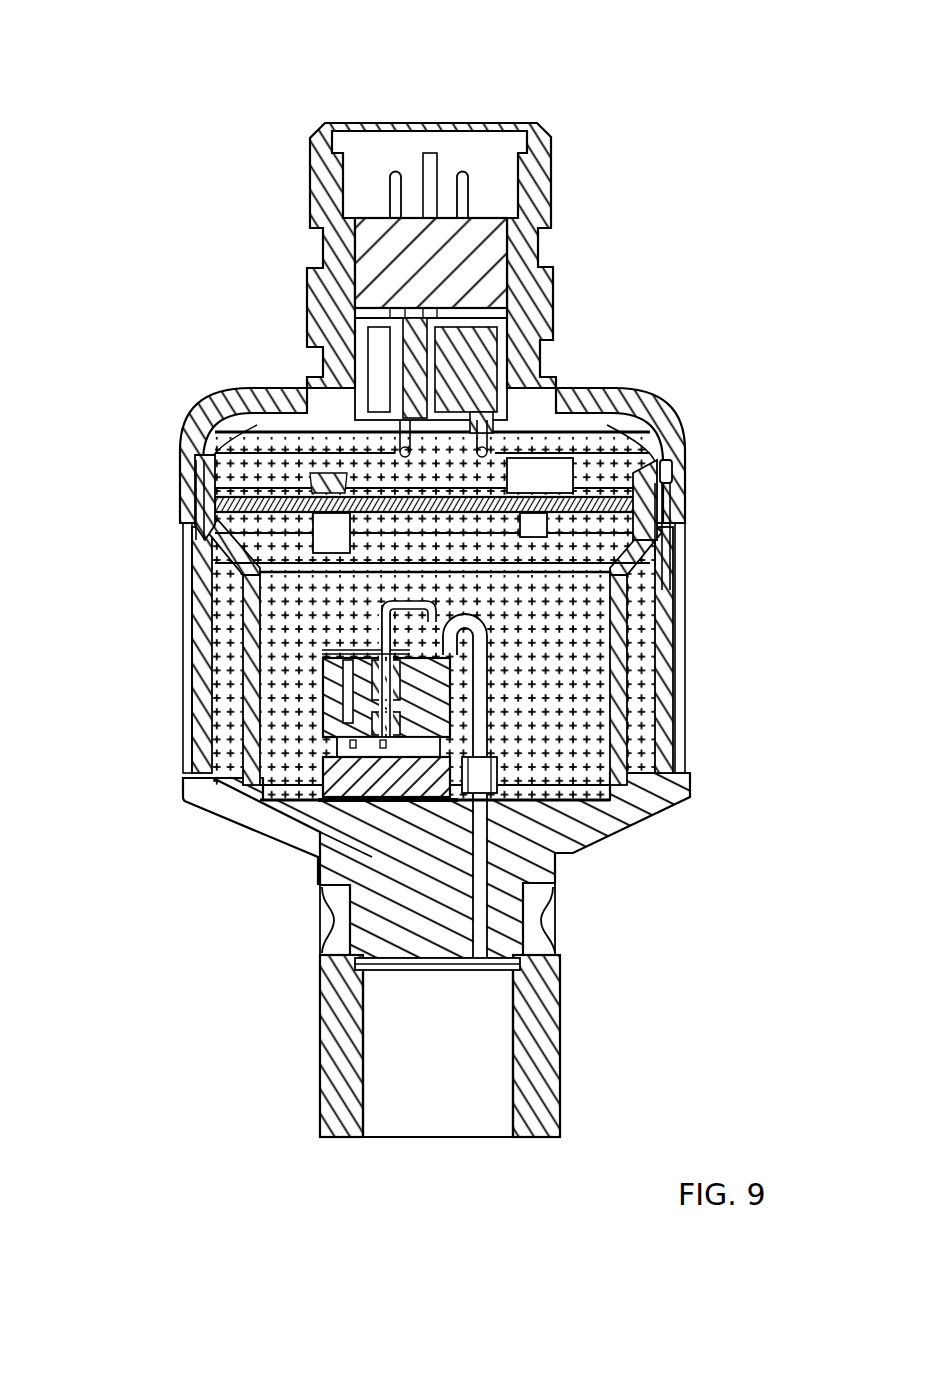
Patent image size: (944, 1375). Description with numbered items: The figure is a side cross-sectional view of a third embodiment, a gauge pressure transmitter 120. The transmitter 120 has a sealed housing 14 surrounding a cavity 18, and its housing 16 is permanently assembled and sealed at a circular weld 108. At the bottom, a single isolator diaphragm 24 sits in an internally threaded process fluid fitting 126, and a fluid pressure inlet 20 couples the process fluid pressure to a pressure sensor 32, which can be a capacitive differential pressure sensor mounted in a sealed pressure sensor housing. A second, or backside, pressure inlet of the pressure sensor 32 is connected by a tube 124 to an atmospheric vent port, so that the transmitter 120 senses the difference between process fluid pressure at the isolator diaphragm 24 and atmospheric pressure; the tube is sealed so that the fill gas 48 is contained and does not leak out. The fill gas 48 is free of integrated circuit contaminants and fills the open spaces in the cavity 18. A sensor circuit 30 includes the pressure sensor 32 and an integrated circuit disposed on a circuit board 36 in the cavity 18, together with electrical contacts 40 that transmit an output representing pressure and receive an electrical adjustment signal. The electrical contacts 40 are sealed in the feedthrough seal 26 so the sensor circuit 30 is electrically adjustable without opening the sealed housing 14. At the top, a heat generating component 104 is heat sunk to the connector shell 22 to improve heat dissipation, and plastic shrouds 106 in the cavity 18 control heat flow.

The pressure transmitter 120 is at (712, 68).
The sealed housing 14 is at (141, 340).
The housing 16 is at (595, 390).
The cavity 18 is at (303, 755).
The fluid pressure inlet 20 is at (477, 710).
The connector shell 22 is at (330, 200).
The isolator diaphragm 24 is at (458, 973).
The feedthrough seal 26 is at (490, 263).
The sensor circuit 30 is at (132, 451).
The pressure sensor 32 is at (323, 710).
The circuit board 36 is at (657, 510).
The electrical contacts 40 is at (462, 172).
The fill gas 48 is at (562, 749).
The heat generating component 104 is at (420, 385).
The plastic shrouds 106 is at (640, 437).
The circular weld 108 is at (683, 587).
The tube 124 is at (383, 613).
The process fluid fitting 126 is at (432, 1083).